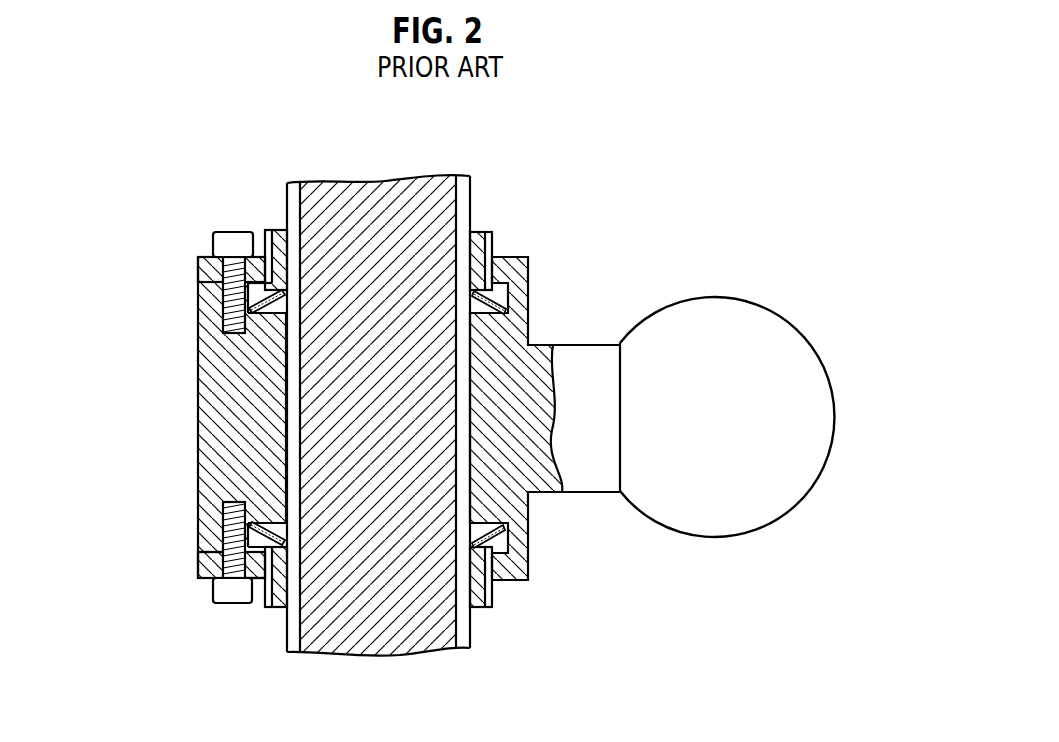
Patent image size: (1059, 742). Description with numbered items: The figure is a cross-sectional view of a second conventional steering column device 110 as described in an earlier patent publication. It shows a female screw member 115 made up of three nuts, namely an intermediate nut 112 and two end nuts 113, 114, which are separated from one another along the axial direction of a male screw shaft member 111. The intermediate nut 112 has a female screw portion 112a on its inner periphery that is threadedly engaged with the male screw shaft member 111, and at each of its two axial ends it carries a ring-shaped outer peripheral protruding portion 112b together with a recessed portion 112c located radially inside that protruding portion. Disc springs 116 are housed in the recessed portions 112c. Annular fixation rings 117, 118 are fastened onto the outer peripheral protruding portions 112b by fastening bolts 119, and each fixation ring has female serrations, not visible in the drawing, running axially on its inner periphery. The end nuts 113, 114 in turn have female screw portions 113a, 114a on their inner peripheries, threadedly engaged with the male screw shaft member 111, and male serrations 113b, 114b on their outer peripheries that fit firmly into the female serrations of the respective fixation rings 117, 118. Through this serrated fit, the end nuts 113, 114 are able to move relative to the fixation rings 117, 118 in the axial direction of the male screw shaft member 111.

The steering column device 110 is at (664, 206).
The male screw shaft member 111 is at (407, 197).
The intermediate nut 112 is at (216, 392).
The female screw portion 112a is at (283, 442).
The outer peripheral protruding portions 112b is at (218, 544).
The recessed portions 112c is at (248, 577).
The end nut 113 is at (277, 605).
The female screw portion 113a is at (300, 545).
The male serrations 113b is at (492, 594).
The end nut 114 is at (268, 232).
The female screw portion 114a is at (289, 262).
The male serrations 114b is at (495, 245).
The female screw member 115 is at (163, 468).
The disc springs 116 is at (226, 300).
The fixation ring 117 is at (198, 560).
The fixation ring 118 is at (200, 262).
The fastening bolts 119 is at (230, 233).